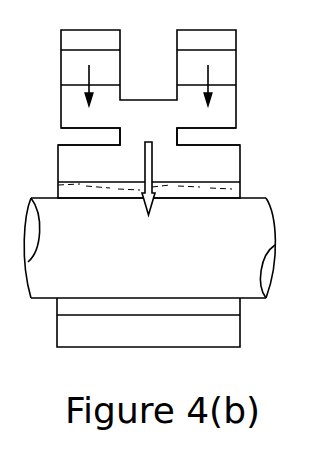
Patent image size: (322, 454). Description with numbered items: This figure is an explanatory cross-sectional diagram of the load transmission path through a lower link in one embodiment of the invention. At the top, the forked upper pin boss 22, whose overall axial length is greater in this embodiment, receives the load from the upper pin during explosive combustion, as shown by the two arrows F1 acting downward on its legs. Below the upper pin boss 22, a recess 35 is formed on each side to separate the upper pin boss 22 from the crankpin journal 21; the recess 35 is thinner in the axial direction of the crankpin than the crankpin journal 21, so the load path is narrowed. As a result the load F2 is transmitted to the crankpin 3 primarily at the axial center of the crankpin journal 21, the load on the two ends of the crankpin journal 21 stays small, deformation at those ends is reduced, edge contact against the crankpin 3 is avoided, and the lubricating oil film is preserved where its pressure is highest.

The upper pin boss 22 is at (68, 41).
The recess 35 is at (70, 138).
The crankpin journal 21 is at (232, 156).
The load from upper pin F1 is at (96, 79).
The load transmitted to crankpin F2 is at (150, 193).
The crankpin 3 is at (249, 278).